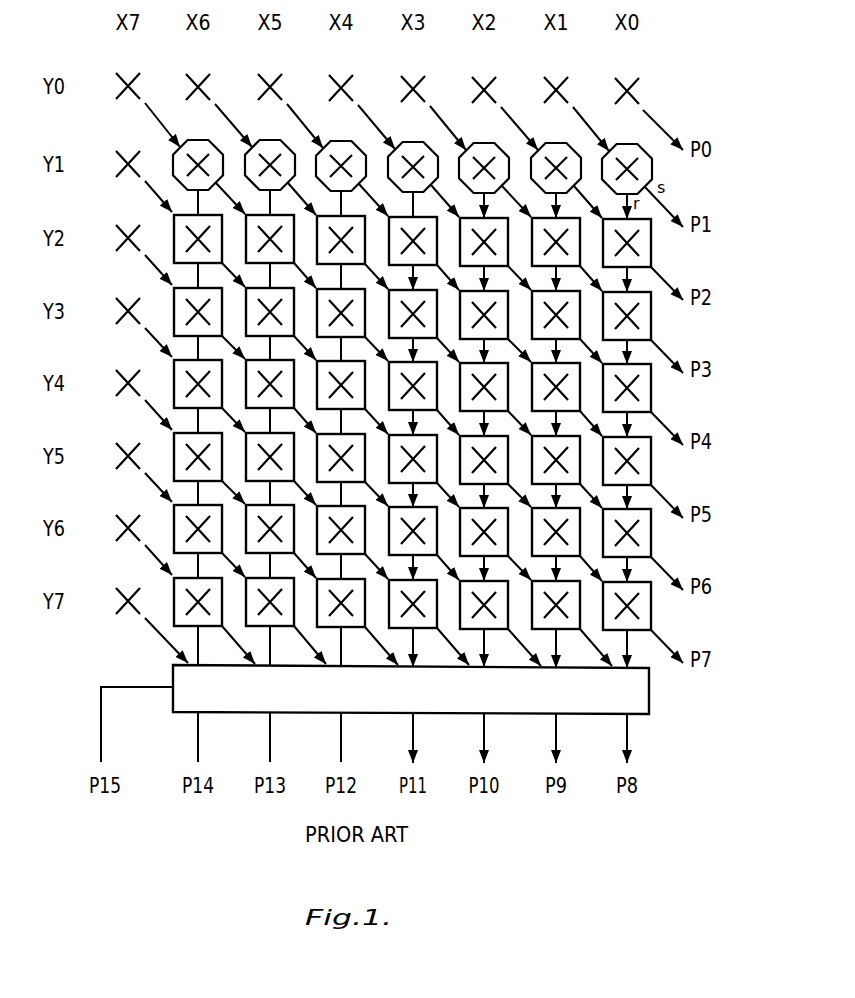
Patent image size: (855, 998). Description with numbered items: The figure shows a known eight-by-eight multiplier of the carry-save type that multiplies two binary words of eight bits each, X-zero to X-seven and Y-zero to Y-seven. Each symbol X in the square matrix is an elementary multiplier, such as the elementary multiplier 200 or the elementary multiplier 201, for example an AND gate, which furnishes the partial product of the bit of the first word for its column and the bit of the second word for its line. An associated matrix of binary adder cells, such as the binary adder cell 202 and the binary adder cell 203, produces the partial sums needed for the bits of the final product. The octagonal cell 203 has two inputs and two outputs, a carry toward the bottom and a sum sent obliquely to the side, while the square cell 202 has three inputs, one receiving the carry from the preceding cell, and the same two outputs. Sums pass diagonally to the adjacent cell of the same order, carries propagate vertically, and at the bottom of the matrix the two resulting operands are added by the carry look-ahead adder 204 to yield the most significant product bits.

The elementary multiplier 200 is at (486, 80).
The elementary multiplier 201 is at (628, 82).
The binary adder cell 202 is at (643, 322).
The binary adder cell 203 is at (652, 168).
The adder of the carry look-ahead type 204 is at (650, 695).